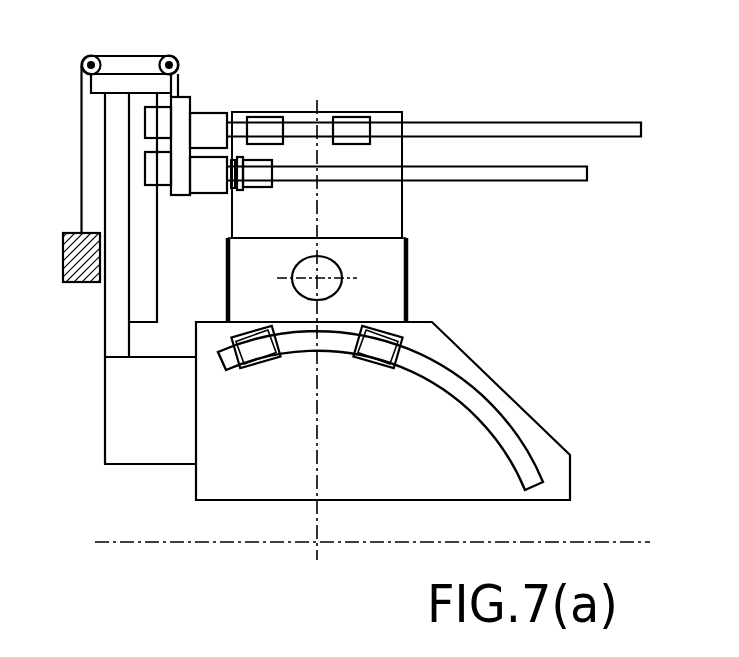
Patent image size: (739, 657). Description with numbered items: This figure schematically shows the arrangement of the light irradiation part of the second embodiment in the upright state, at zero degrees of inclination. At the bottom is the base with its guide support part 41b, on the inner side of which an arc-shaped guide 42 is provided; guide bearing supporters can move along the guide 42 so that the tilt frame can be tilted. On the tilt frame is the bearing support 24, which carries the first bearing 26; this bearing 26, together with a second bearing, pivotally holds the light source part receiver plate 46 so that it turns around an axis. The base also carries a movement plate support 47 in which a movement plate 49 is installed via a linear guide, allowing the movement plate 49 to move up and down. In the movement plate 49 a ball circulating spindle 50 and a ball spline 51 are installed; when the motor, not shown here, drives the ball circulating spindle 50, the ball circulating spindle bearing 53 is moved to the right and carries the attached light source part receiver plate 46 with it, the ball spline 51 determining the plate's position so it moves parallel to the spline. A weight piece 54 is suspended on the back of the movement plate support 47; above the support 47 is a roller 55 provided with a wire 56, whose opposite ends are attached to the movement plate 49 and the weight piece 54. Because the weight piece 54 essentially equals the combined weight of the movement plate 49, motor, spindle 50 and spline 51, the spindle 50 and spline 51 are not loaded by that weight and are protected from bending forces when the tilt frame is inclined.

The bearing support 24 is at (407, 262).
The first bearing 26 is at (342, 288).
The guide support part 41b is at (463, 347).
The arc-shaped guide 42 is at (487, 403).
The light source part receiver plate 46 is at (380, 112).
The movement plate support 47 is at (152, 466).
The movement plate 49 is at (191, 100).
The ball circulating spindle 50 is at (518, 181).
The ball spline 51 is at (568, 122).
The ball circulating spindle bearing 53 is at (262, 188).
The weight piece 54 is at (84, 283).
The roller 55 is at (82, 68).
The wire 56 is at (134, 55).